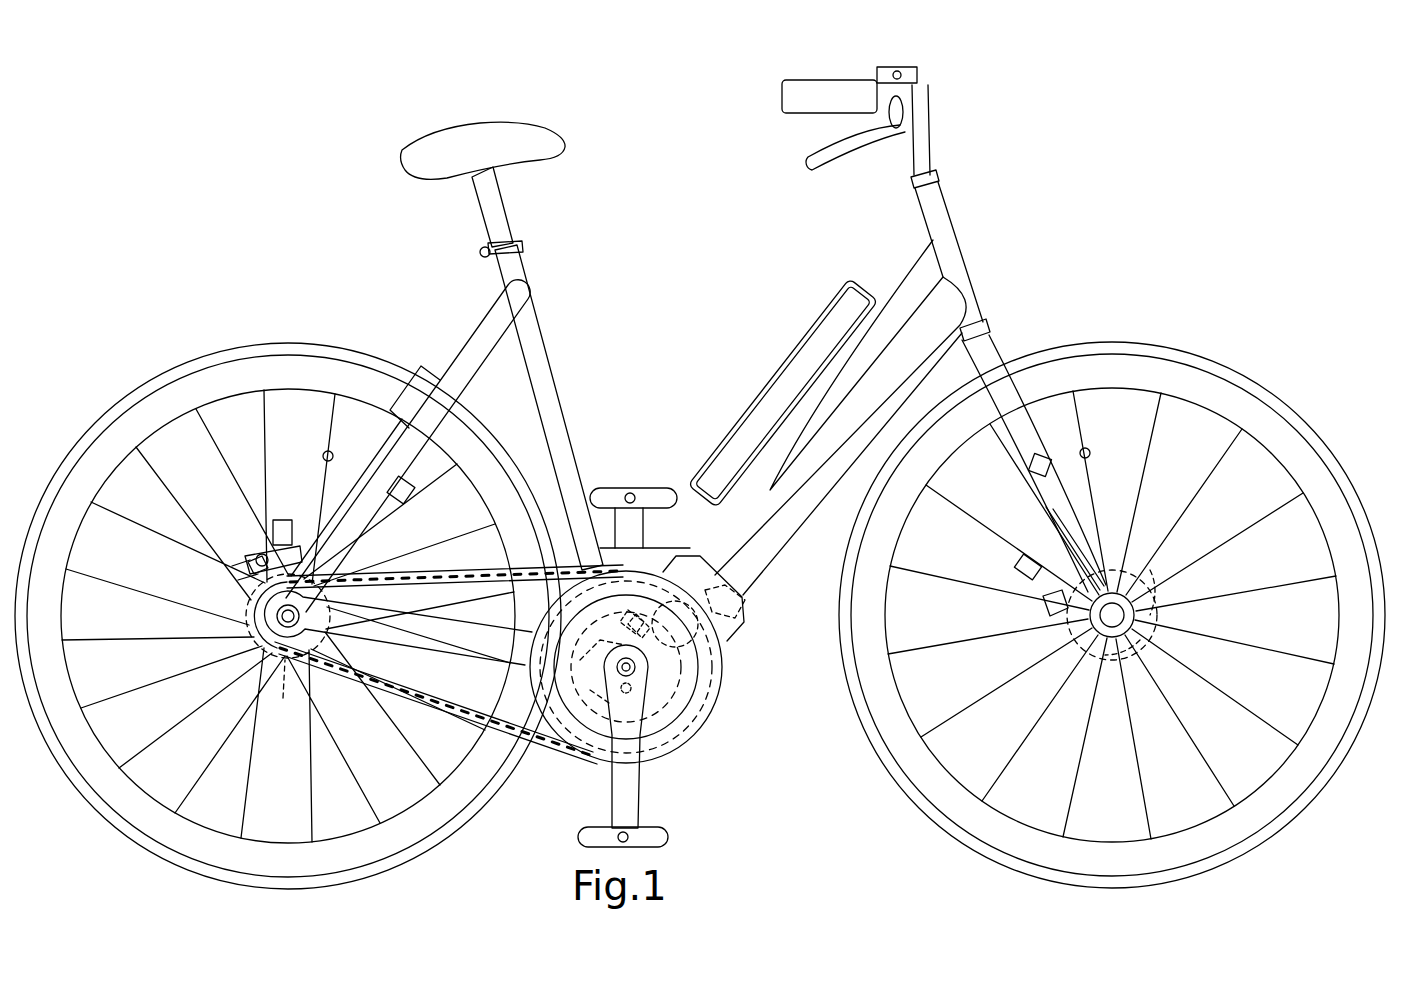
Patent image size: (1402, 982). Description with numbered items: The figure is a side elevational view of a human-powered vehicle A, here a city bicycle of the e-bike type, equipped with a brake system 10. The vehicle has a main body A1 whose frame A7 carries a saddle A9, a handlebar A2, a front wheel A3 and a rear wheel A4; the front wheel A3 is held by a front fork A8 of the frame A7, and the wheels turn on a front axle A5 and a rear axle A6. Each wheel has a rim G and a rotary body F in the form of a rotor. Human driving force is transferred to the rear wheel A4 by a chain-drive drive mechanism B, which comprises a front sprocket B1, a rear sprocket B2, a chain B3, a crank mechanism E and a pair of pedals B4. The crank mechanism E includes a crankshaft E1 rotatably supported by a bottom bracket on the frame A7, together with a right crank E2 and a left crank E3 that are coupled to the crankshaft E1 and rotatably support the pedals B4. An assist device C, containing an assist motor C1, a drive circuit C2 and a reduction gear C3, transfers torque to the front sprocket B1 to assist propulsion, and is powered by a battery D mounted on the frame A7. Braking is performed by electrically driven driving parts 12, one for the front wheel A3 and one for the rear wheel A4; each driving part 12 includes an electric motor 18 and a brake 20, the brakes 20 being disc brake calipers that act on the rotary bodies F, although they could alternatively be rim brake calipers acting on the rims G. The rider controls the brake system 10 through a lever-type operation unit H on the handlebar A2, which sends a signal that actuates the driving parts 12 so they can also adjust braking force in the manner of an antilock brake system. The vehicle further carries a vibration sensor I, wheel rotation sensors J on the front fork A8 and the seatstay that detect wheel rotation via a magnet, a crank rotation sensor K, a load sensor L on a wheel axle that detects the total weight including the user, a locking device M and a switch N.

The human-powered vehicle A is at (1062, 63).
The brake system 10 is at (1104, 210).
The main body A1 is at (546, 343).
The handlebar A2 is at (805, 79).
The front wheel A3 is at (1172, 343).
The rear wheel A4 is at (232, 345).
The axle of the front wheel A5 is at (1140, 660).
The axle of the rear wheel A6 is at (312, 618).
The frame A7 is at (776, 511).
The front fork A8 is at (1025, 492).
The saddle A9 is at (480, 122).
The drive mechanism B is at (717, 828).
The front sprocket B1 is at (574, 756).
The rear sprocket B2 is at (262, 663).
The chain B3 is at (390, 690).
The pedals B4 is at (632, 488).
The assist device C is at (744, 592).
The assist motor C1 is at (745, 620).
The drive circuit C2 is at (528, 650).
The reduction gear C3 is at (712, 650).
The battery D is at (766, 387).
The crank mechanism E is at (750, 729).
The crankshaft E1 is at (690, 642).
The right crank E2 is at (640, 800).
The left crank E3 is at (645, 530).
The rotary bodies F is at (246, 637).
The rims G is at (144, 384).
The operation unit H is at (855, 155).
The vibration sensor I is at (903, 75).
The wheel rotation sensor J is at (414, 491).
The crank rotation sensor K is at (694, 737).
The load sensor L is at (1188, 618).
The locking device M is at (412, 366).
The switch N is at (892, 67).
The driving parts 12 is at (292, 494).
The electric motors 18 is at (297, 520).
The brakes 20 is at (254, 558).